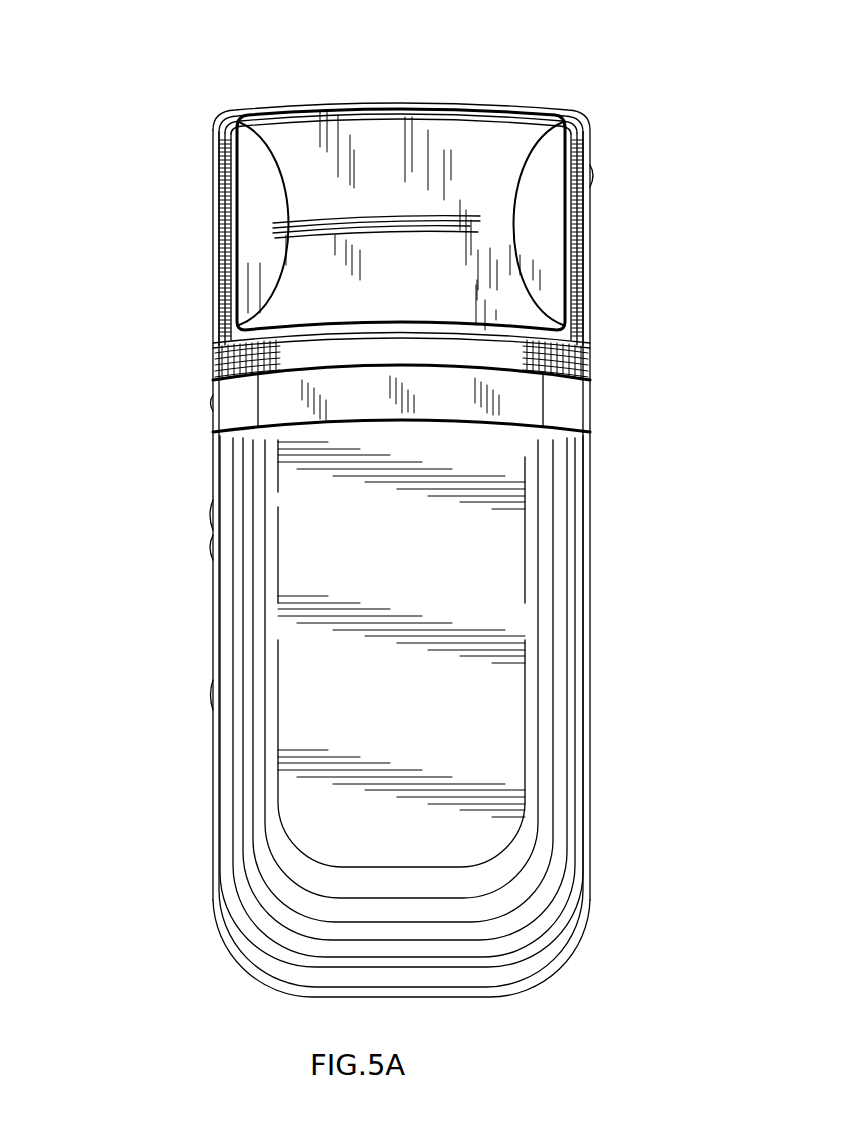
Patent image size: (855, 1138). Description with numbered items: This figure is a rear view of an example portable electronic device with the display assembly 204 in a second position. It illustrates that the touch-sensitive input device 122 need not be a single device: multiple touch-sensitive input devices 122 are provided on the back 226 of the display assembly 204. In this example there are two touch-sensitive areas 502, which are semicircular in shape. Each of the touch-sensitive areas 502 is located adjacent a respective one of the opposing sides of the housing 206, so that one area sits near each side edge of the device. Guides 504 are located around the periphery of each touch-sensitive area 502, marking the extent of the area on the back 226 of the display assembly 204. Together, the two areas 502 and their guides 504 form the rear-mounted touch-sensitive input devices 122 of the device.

The touch-sensitive input device 122 is at (545, 182).
The back of the display assembly 226 is at (495, 133).
The housing 206 is at (578, 158).
The touch-sensitive area 502 is at (253, 200).
The guide 504 is at (300, 237).
The display assembly 204 is at (588, 325).